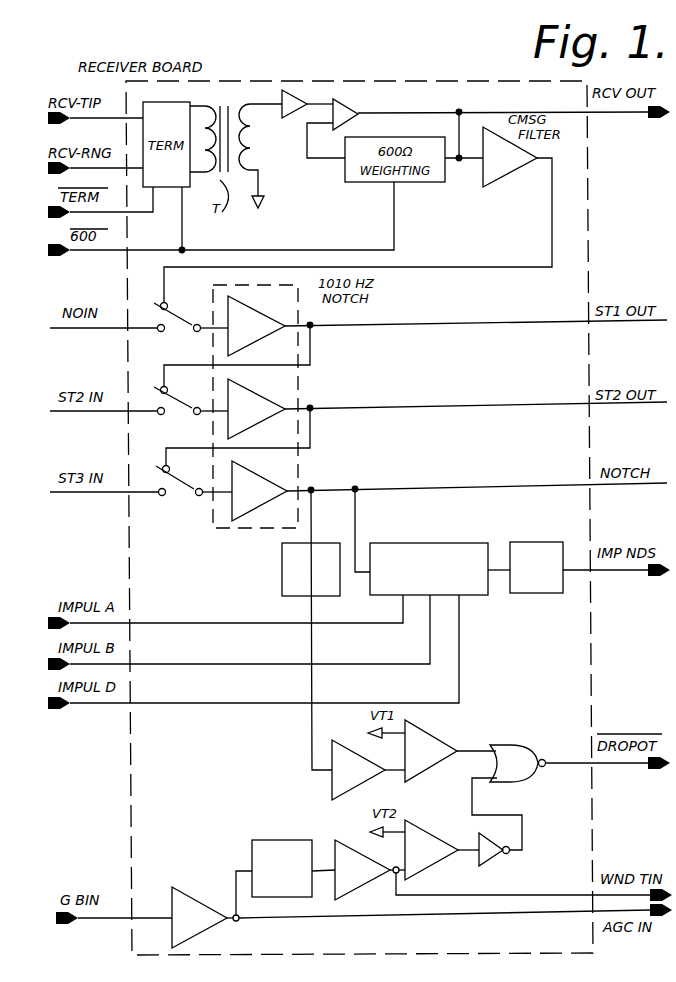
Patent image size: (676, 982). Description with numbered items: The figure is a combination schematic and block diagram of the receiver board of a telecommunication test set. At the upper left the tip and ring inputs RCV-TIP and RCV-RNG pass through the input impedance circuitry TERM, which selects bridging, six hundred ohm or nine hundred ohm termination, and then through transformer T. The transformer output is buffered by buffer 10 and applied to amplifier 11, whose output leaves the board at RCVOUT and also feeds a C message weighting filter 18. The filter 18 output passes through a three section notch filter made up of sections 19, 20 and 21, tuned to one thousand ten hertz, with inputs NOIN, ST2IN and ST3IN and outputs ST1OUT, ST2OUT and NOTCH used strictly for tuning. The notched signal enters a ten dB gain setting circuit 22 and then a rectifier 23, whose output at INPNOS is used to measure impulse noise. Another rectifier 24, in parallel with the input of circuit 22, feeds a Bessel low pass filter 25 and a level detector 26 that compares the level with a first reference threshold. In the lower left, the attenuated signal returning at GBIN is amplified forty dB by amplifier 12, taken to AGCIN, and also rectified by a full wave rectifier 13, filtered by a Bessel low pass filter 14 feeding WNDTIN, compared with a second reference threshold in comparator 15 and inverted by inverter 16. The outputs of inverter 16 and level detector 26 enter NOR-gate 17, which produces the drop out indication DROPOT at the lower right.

The buffer 10 is at (300, 90).
The amplifier 11 is at (342, 99).
The amplifier 12 is at (206, 893).
The full wave rectifier 13 is at (277, 840).
The 500 Hz Bessel low pass filter 14 is at (352, 843).
The comparator 15 is at (452, 840).
The inverter 16 is at (495, 862).
The NOR-gate 17 is at (525, 780).
The C message weighting filter 18 is at (503, 180).
The notch filter section 19 is at (259, 312).
The notch filter section 20 is at (262, 392).
The notch filter section 21 is at (262, 476).
The 10 dB gain setting circuit 22 is at (437, 543).
The rectifier 23 is at (548, 542).
The rectifier 24 is at (282, 562).
The 500 Hz Bessel low pass filter 25 is at (350, 740).
The level detector 26 is at (430, 736).